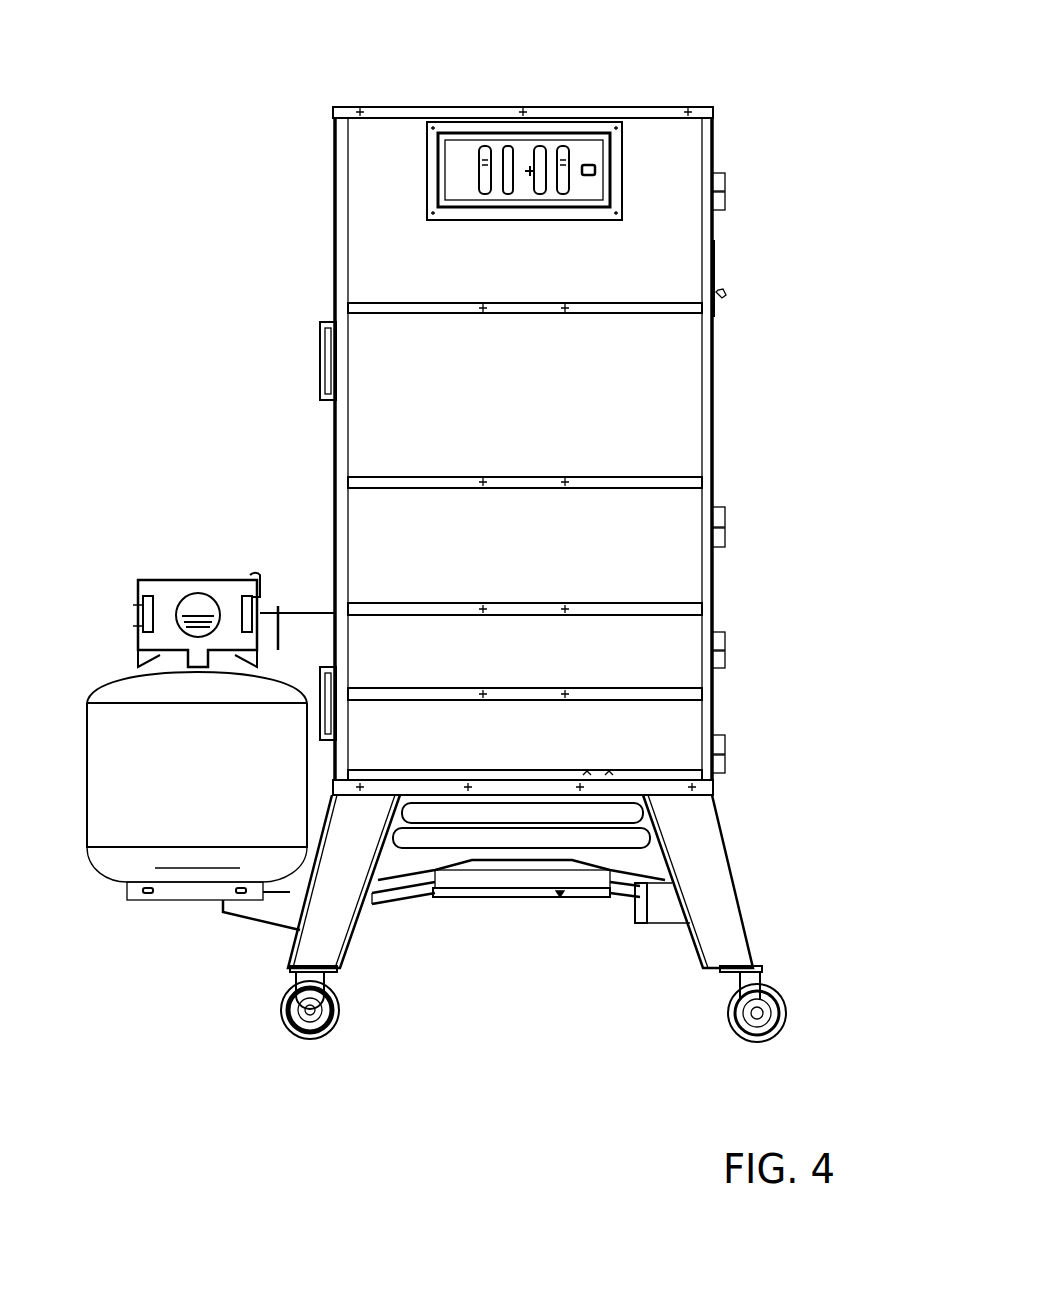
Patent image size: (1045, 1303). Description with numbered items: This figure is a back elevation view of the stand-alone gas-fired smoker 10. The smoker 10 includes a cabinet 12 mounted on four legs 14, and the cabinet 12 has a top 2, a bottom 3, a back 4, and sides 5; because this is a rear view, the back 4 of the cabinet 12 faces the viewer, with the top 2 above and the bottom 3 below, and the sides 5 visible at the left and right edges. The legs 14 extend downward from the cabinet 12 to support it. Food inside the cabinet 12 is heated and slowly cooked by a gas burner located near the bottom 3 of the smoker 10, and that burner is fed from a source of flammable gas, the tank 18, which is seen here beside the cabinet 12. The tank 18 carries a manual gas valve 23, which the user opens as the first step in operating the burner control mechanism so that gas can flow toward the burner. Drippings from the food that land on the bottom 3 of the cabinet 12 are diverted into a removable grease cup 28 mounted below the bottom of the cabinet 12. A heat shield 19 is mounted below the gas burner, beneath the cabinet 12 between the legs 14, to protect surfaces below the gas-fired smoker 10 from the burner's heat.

The top 2 is at (538, 106).
The bottom 3 is at (713, 785).
The back 4 is at (585, 425).
The sides 5 is at (335, 231).
The gas-fired smoker 10 is at (799, 118).
The cabinet 12 is at (714, 359).
The legs 14 is at (318, 938).
The source (tank) of flammable gas 18 is at (99, 675).
The heat shield 19 is at (533, 898).
The manual gas valve 23 is at (198, 592).
The grease cup 28 is at (655, 905).